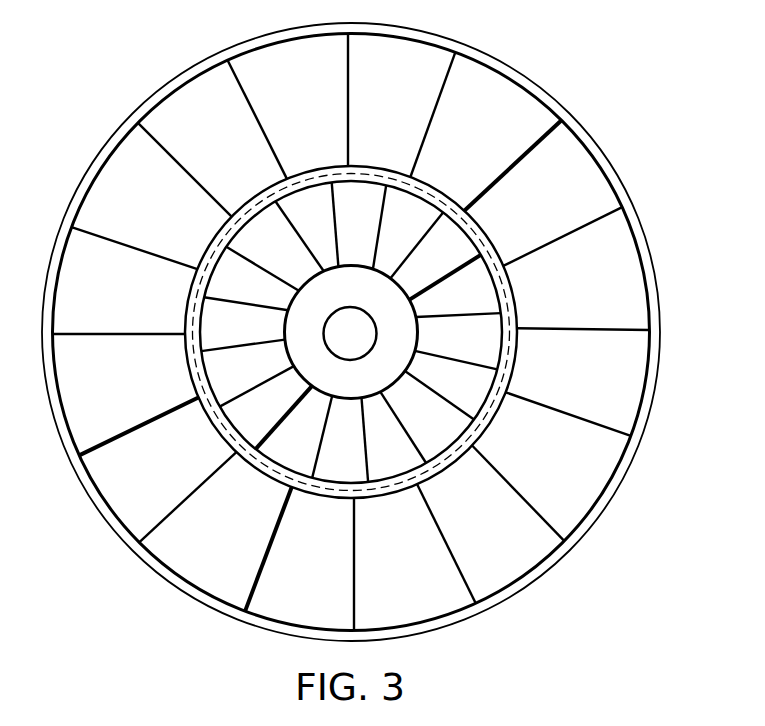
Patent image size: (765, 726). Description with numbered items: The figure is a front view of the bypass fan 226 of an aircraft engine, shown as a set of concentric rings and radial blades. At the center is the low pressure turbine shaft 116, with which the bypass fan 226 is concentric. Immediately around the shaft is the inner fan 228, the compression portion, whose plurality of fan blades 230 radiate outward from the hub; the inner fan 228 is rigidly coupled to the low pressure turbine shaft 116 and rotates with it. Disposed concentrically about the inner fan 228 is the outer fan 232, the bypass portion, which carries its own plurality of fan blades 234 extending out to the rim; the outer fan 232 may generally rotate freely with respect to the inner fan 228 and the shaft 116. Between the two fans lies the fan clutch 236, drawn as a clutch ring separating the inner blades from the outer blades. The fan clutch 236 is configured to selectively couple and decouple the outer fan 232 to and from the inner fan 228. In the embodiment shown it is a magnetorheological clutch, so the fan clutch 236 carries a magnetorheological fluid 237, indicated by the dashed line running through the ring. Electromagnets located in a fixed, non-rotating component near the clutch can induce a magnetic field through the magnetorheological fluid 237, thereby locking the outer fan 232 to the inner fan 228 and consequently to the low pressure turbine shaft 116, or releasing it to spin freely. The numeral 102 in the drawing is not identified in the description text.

The turbine wheel 102 is at (174, 78).
The low pressure turbine shaft 116 is at (337, 335).
The bypass fan 226 is at (513, 62).
The inner fan 228 is at (380, 460).
The fan blades 230 is at (457, 408).
The outer fan 232 is at (434, 94).
The fan blades 234 is at (523, 156).
The fan clutch 236 is at (260, 197).
The magnetorheological fluid 237 is at (507, 287).